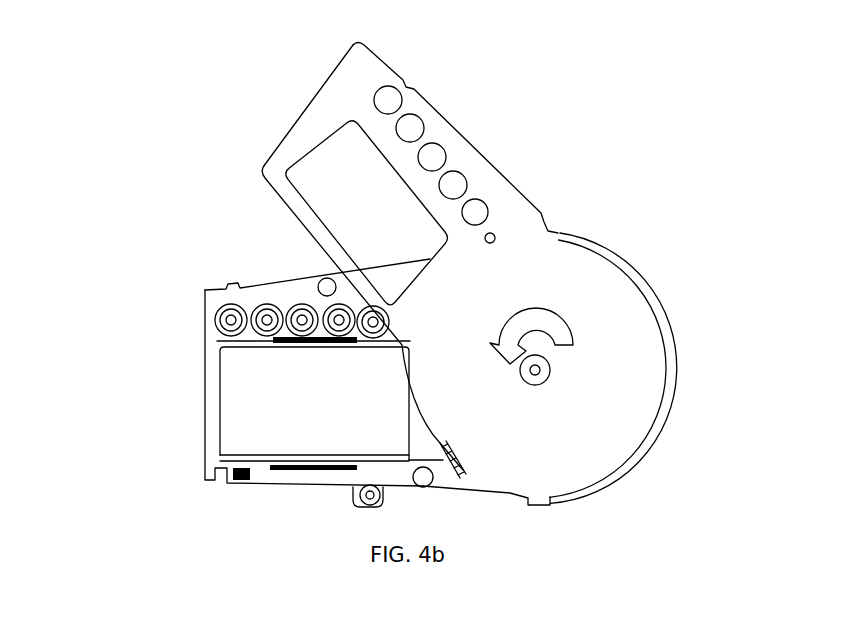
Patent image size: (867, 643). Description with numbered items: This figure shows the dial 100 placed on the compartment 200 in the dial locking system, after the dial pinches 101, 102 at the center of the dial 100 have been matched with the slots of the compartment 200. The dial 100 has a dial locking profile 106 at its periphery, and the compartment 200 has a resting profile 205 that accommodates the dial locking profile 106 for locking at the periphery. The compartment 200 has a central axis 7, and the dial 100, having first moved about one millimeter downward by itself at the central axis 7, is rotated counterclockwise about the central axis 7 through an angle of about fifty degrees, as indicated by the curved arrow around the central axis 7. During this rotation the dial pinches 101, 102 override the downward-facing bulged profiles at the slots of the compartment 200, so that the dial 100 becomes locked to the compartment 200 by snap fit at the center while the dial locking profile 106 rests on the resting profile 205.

The dial 100 is at (467, 158).
The compartment 200 is at (217, 298).
The dial locking profile 106 is at (407, 347).
The resting profile 205 is at (443, 460).
The dial pinch 101 is at (527, 383).
The dial pinch 102 is at (653, 553).
The central axis 7 is at (545, 356).